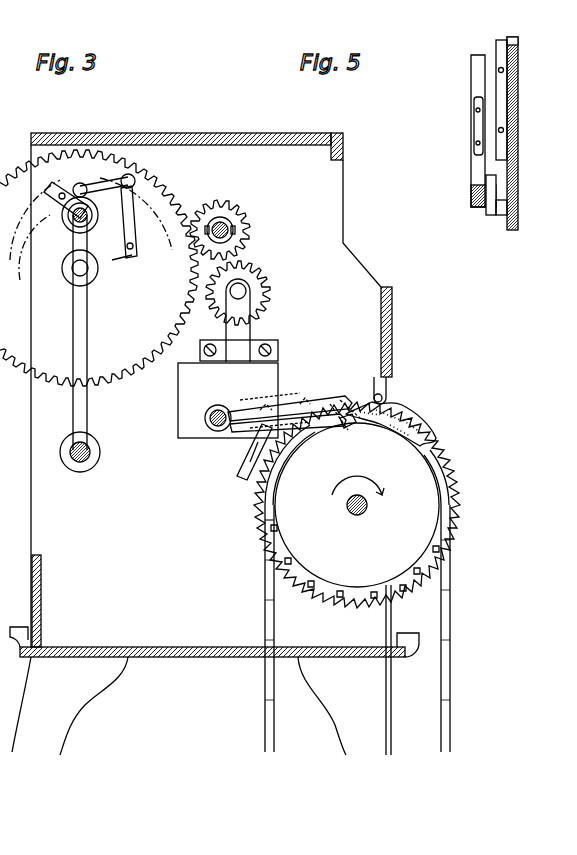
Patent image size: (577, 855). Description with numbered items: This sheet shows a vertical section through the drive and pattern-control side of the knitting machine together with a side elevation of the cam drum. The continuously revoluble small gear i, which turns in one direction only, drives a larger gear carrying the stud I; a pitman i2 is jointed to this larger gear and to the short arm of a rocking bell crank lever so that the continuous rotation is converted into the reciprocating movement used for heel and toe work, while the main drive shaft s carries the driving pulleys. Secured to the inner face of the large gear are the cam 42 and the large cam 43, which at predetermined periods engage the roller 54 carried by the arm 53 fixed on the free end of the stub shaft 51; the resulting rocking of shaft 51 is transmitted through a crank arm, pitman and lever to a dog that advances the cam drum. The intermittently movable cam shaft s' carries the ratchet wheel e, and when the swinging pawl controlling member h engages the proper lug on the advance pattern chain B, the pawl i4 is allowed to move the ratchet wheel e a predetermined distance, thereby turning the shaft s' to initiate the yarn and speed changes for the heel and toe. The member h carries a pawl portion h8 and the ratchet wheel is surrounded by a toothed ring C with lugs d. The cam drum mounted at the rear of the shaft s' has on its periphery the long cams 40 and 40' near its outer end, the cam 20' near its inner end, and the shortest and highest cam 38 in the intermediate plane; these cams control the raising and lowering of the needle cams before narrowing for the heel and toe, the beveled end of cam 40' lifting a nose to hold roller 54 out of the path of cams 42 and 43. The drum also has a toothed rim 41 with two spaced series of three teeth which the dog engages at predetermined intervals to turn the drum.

In FIG. 3, the stud I is at (60, 268).
In FIG. 3, the cam 43 is at (62, 214).
In FIG. 3, the pitman i2 is at (80, 362).
In FIG. 3, the stub shaft 51 is at (78, 150).
In FIG. 3, the arm 53 is at (105, 162).
In FIG. 3, the roller 54 is at (142, 176).
In FIG. 3, the cam 42 is at (124, 274).
In FIG. 3, the small gear i is at (223, 212).
In FIG. 3, the main drive shaft s is at (241, 217).
In FIG. 3, the pawl i4 is at (324, 406).
In FIG. 3, the cam shaft s' is at (358, 514).
In FIG. 3, the ratchet wheel e is at (357, 505).
In FIG. 3, the toothed ring C is at (265, 580).
In FIG. 3, the ring lugs d is at (300, 576).
In FIG. 3, the pattern chain B is at (263, 674).
In FIG. 3, the pawl controlling member h is at (414, 420).
In FIG. 3, the hook pawl h8 is at (334, 430).
In FIG. 5, the cam 40 is at (528, 100).
In FIG. 5, the toothed rim 41 is at (512, 114).
In FIG. 5, the cam 20' is at (451, 131).
In FIG. 5, the cam 38 is at (481, 188).
In FIG. 5, the cam 40' is at (490, 236).